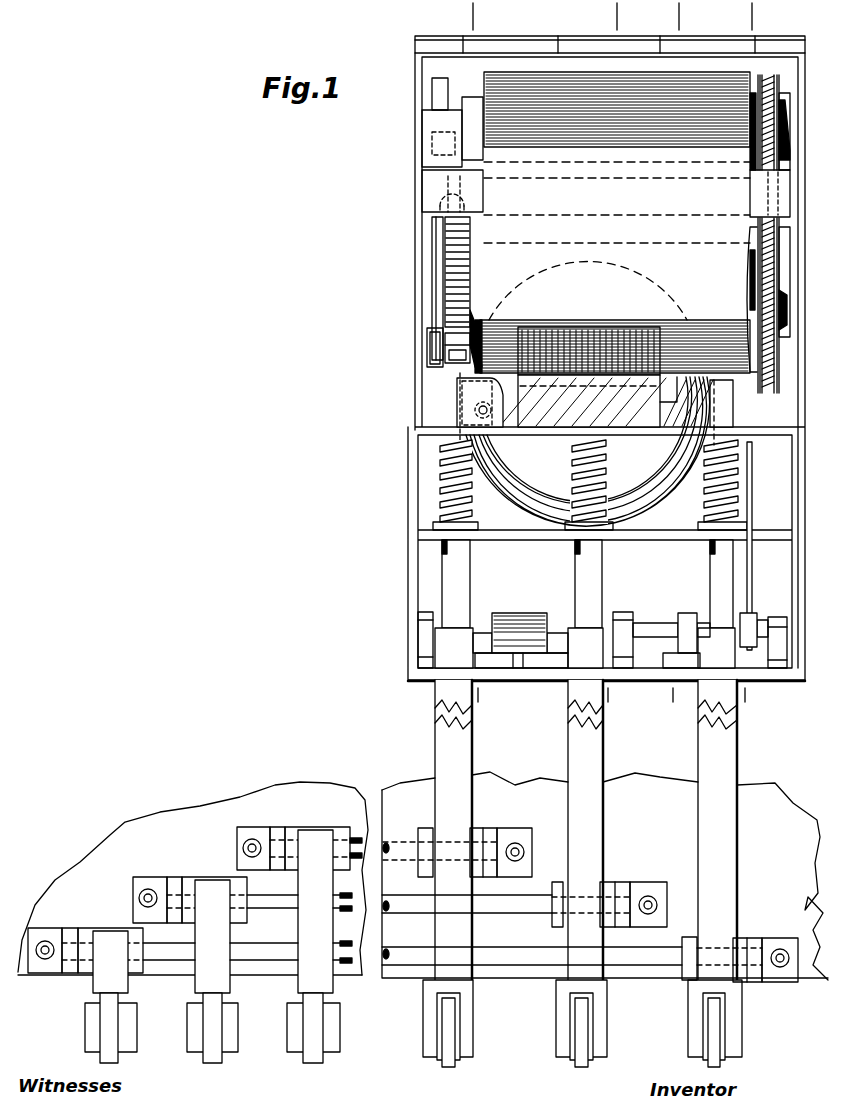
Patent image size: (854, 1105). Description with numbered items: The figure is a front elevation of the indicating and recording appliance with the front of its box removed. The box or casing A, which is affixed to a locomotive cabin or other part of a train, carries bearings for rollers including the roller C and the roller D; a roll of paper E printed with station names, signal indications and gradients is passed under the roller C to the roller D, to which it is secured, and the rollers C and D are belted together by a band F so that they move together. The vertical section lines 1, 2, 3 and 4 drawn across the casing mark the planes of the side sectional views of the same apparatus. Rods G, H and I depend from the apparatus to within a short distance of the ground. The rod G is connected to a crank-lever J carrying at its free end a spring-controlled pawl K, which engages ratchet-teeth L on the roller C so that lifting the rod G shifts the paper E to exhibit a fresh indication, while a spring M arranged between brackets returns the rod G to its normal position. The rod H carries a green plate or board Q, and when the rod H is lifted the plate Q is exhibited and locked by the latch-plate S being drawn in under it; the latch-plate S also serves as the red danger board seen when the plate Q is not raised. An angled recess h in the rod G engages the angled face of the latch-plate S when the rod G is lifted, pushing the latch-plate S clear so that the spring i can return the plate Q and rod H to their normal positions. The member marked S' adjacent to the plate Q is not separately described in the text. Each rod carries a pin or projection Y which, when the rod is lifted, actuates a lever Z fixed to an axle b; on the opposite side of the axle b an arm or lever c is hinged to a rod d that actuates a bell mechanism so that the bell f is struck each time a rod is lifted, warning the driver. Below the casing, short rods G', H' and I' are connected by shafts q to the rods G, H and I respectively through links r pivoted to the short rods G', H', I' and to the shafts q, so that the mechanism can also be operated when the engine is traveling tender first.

The section line 1 1 is at (481, 361).
The section line 2 2 is at (619, 361).
The section line 3 3 is at (683, 361).
The section line 4 4 is at (755, 361).
The box or casing A is at (415, 155).
The paper E is at (542, 127).
The roller D is at (472, 124).
The band F is at (776, 178).
The roller C is at (458, 290).
The spring-controlled pawl K is at (455, 225).
The crank-lever J is at (438, 250).
The ratchet-teeth L is at (450, 297).
The angled recess h is at (448, 366).
The latch-plate S is at (445, 409).
The switch core S' is at (589, 351).
The plate or board Q is at (606, 401).
The spring M is at (450, 460).
The spring i is at (578, 471).
The bell f is at (537, 480).
The rod d is at (753, 473).
The axle b is at (478, 622).
The lever Z is at (523, 613).
The pin or projection Y is at (540, 662).
The arm or lever c is at (753, 623).
The rod G is at (457, 803).
The rod H is at (591, 803).
The rod I is at (720, 803).
The links r is at (477, 837).
The shafts q is at (405, 825).
The short rod G' is at (299, 945).
The short rod H' is at (242, 970).
The short rod I' is at (190, 995).